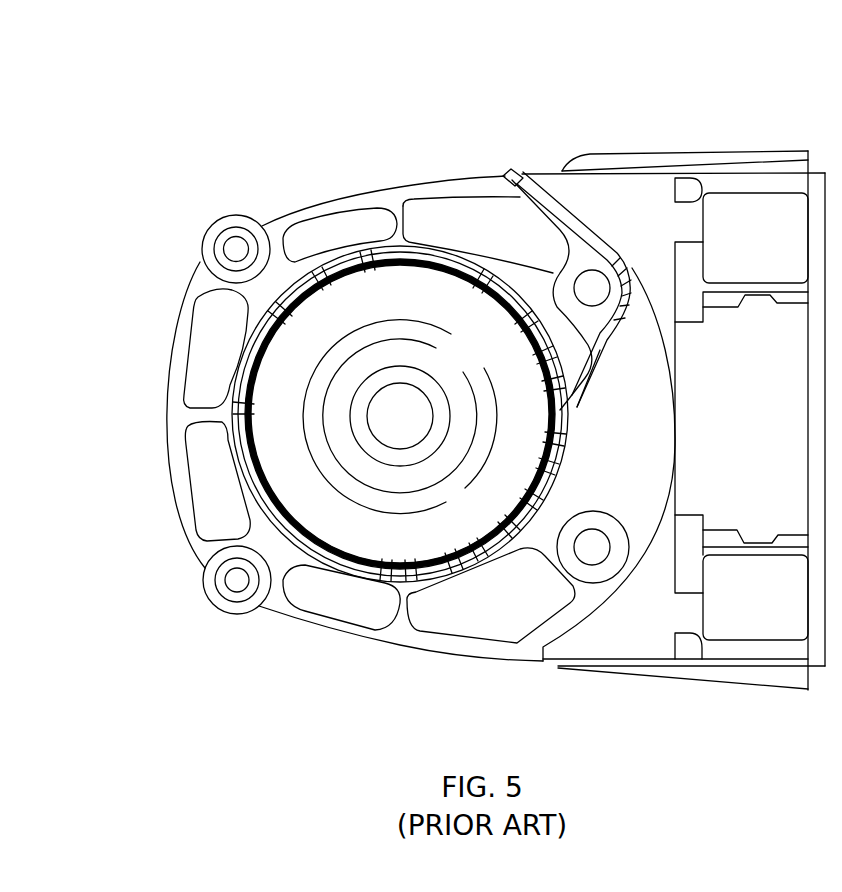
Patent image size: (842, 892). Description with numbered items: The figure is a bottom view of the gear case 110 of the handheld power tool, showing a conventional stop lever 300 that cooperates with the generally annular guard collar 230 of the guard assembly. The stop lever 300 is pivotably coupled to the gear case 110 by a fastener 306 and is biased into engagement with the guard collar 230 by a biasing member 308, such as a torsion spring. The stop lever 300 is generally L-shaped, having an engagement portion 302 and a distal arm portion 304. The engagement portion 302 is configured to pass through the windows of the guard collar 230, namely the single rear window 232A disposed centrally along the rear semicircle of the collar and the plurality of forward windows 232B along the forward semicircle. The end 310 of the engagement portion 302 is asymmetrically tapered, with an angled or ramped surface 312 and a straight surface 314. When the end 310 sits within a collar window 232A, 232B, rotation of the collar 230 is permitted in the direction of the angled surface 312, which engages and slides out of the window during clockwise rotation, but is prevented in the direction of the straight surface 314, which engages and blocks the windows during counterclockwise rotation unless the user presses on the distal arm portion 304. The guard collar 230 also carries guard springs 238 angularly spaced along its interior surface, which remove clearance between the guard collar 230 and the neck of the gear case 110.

The gear case 110 is at (226, 132).
The guard collar 230 is at (430, 250).
The rear window 232A is at (563, 450).
The forward windows 232B is at (293, 294).
The guard springs 238 is at (370, 266).
The stop lever 300 is at (603, 243).
The engagement portion 302 is at (573, 392).
The distal arm portion 304 is at (548, 172).
The fastener 306 is at (594, 290).
The biasing member 308 is at (627, 272).
The end of the engagement portion 310 is at (548, 408).
The angled surface 312 is at (543, 380).
The straight surface 314 is at (572, 411).